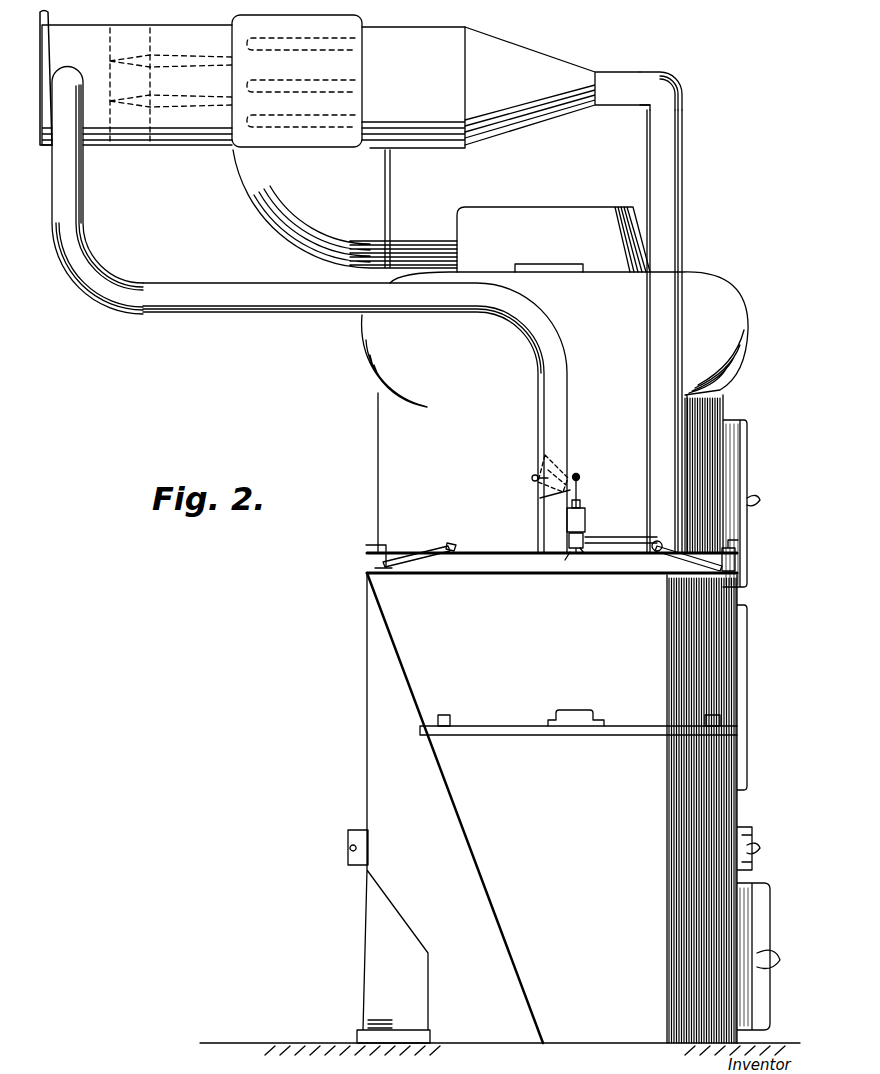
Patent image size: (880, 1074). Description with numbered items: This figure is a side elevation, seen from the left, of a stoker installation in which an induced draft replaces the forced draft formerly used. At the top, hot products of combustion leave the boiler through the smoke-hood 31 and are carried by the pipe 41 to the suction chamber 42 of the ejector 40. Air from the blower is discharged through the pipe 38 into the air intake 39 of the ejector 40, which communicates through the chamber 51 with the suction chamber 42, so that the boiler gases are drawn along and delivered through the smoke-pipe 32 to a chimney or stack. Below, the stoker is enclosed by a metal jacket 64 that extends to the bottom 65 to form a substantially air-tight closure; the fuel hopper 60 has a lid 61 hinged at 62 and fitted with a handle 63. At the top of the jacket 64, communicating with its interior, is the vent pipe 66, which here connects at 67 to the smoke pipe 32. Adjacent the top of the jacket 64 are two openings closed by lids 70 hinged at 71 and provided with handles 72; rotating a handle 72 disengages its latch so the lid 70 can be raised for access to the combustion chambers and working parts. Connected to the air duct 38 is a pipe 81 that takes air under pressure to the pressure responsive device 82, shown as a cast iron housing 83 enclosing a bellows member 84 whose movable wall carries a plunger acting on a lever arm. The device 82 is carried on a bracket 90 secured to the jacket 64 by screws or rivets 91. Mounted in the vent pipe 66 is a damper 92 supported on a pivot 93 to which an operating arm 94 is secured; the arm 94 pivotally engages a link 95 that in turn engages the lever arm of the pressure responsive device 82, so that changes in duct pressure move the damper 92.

The smoke-hood 31 is at (595, 213).
The smoke-pipe 32 is at (100, 142).
The pipe 38 is at (655, 398).
The air intake 39 is at (646, 73).
The ejector 40 is at (525, 103).
The pipe 41 is at (528, 182).
The suction chamber 42 is at (297, 17).
The chamber 51 is at (416, 97).
The fuel hopper 60 is at (632, 928).
The lid 61 is at (640, 725).
The hinge 62 is at (462, 708).
The handle 63 is at (580, 712).
The metal jacket 64 is at (710, 630).
The bottom 65 is at (472, 1043).
The vent pipe 66 is at (570, 440).
The connection 67 is at (73, 70).
The lid 70 is at (412, 550).
The hinge 71 is at (452, 544).
The handle 72 is at (376, 545).
The pipe 81 is at (622, 532).
The pressure responsive device 82 is at (586, 520).
The cast iron housing 83 is at (585, 542).
The bellows member 84 is at (580, 502).
The bracket 90 is at (572, 553).
The screws or rivets 91 is at (581, 549).
The damper 92 is at (544, 462).
The pivot 93 is at (534, 481).
The operating arm 94 is at (579, 478).
The link 95 is at (540, 498).